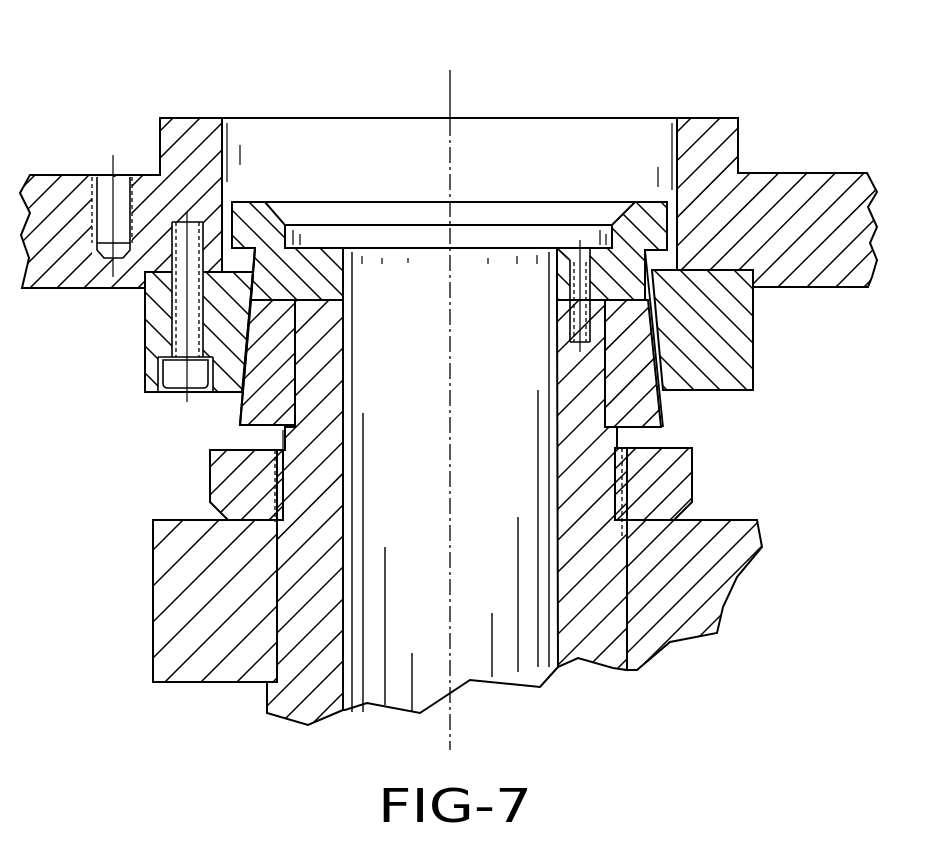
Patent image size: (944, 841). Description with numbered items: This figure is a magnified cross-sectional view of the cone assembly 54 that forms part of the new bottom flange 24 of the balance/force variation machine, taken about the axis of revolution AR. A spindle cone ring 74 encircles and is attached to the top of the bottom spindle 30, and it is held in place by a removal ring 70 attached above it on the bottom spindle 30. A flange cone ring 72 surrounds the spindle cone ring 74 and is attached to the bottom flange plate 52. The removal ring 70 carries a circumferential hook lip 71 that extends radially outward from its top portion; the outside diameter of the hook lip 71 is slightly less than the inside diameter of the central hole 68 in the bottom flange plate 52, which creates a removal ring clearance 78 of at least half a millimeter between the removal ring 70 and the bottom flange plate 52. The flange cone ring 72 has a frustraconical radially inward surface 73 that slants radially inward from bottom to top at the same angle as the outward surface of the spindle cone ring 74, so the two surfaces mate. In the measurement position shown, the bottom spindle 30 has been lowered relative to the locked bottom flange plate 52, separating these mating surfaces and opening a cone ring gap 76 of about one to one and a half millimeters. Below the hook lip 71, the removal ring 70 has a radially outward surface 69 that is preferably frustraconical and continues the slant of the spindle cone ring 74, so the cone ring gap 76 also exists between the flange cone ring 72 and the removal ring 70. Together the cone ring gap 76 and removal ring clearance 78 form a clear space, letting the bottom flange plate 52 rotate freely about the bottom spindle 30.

The bottom flange 24 is at (140, 121).
The removal ring clearance 78 is at (231, 195).
The central hole 68 is at (525, 155).
The axis of revolution AR is at (448, 95).
The removal ring 70 is at (650, 200).
The hook lip 71 is at (668, 217).
The bottom flange plate 52 is at (793, 202).
The radially outward surface 69 is at (640, 264).
The cone assembly 54 is at (128, 347).
The cone ring gap 76 is at (230, 407).
The flange cone ring 72 is at (742, 312).
The frustraconical radially inward surface 73 is at (672, 354).
The spindle cone ring 74 is at (672, 403).
The bottom spindle 30 is at (307, 715).